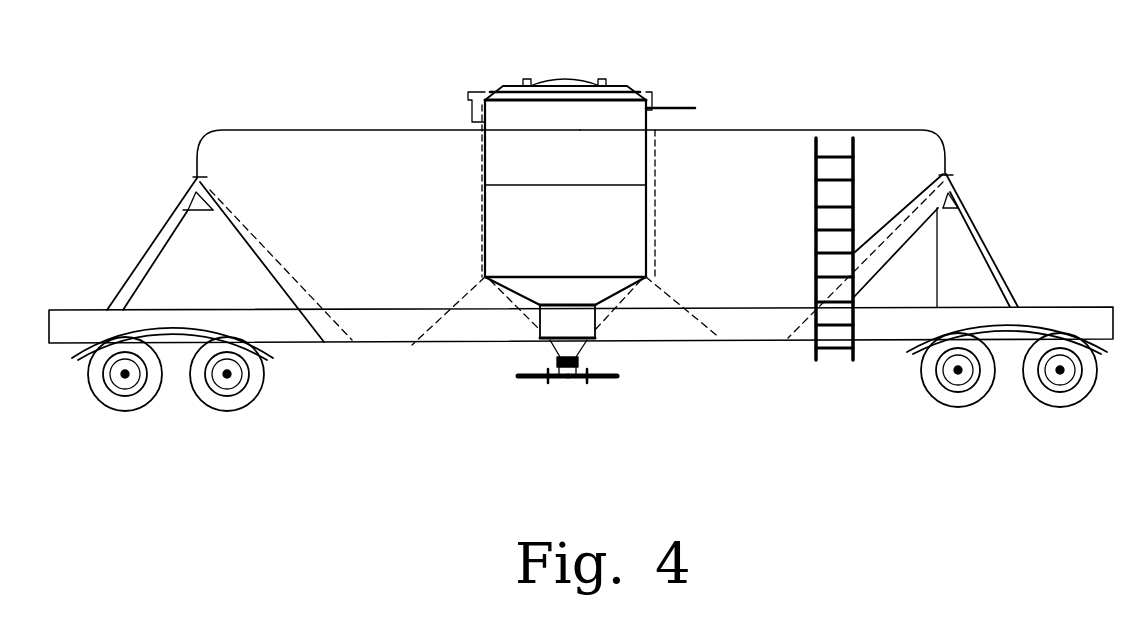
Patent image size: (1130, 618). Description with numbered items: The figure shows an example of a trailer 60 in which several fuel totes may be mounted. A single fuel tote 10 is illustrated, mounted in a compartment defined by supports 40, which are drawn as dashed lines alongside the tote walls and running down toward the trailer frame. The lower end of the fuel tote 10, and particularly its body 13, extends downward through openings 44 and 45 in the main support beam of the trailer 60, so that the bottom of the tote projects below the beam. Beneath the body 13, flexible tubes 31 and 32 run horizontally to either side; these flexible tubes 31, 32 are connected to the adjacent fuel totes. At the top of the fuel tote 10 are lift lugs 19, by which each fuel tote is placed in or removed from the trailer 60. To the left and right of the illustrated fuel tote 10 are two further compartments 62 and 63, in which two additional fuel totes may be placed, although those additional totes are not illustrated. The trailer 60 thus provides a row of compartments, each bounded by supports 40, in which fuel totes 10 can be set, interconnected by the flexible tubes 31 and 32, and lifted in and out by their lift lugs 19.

The fuel tote 10 is at (623, 168).
The body 13 is at (625, 379).
The lift lugs 19 is at (528, 77).
The flexible tube 31 is at (540, 380).
The flexible tube 32 is at (600, 380).
The supports 40 is at (480, 170).
The opening 44 is at (557, 307).
The opening 45 is at (593, 340).
The trailer 60 is at (755, 420).
The compartment 62 is at (763, 215).
The compartment 63 is at (373, 218).